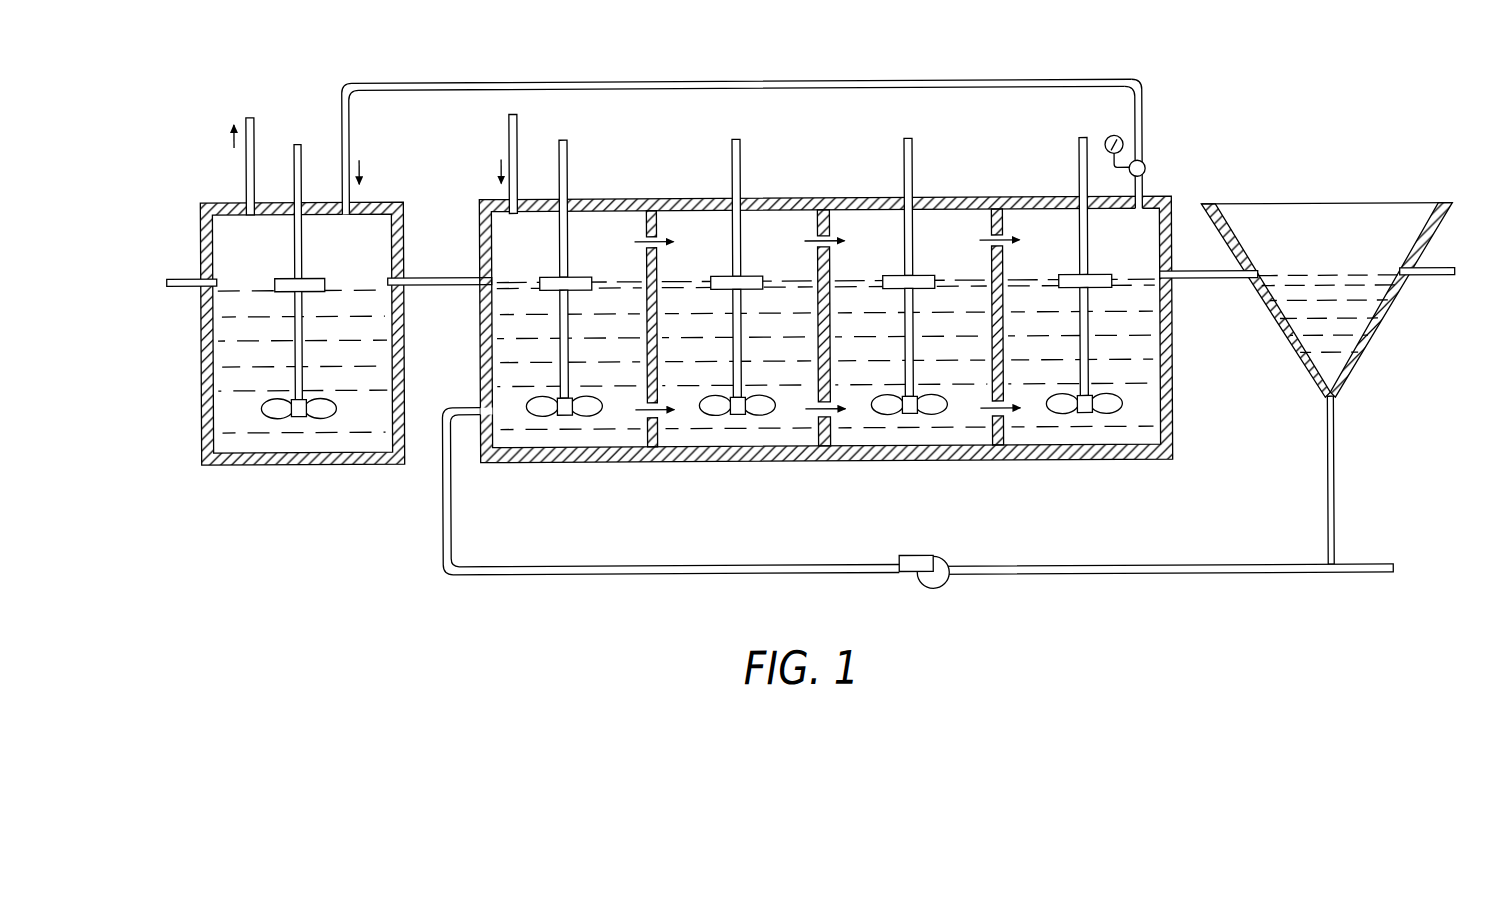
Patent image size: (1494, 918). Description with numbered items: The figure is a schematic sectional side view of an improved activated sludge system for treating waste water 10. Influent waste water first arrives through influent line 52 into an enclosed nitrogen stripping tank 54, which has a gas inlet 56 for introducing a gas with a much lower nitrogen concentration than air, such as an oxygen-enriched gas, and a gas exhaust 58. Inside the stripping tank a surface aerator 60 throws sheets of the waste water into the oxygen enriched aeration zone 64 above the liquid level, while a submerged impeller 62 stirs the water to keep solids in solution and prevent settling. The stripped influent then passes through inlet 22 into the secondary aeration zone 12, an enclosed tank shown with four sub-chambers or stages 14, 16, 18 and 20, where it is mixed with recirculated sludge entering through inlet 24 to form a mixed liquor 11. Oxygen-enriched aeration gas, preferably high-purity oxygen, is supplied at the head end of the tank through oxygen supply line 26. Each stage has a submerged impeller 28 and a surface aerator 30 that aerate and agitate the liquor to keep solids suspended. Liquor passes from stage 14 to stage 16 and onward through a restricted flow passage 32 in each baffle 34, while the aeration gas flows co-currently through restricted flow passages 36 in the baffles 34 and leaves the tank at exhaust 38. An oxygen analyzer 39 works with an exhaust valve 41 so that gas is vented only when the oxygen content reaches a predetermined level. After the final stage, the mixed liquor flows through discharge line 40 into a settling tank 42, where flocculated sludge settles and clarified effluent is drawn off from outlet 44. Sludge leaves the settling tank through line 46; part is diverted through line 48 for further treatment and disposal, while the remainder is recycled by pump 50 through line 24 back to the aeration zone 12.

The activated sludge system for treating waste water 10 is at (1229, 173).
The mixed liquor 11 is at (622, 368).
The secondary aeration zone 12 is at (646, 178).
The first sub-chamber 14 is at (536, 249).
The second sub-chamber 16 is at (712, 244).
The third sub-chamber 18 is at (955, 242).
The fourth sub-chamber 20 is at (1122, 237).
The inlet 22 is at (435, 276).
The inlet 24 is at (442, 522).
The oxygen supply line 26 is at (518, 133).
The submerged impeller 28 is at (540, 412).
The surface aerator 30 is at (578, 276).
The restricted flow passage 32 is at (648, 413).
The baffle 34 is at (659, 365).
The restricted flow passage 36 is at (658, 245).
The exhaust 38 is at (1145, 186).
The oxygen analyzer 39 is at (1116, 137).
The discharge line 40 is at (1196, 282).
The exhaust valve 41 is at (1144, 164).
The settling tank 42 is at (1286, 352).
The outlet 44 is at (1444, 279).
The line 46 is at (1335, 474).
The line 48 is at (1390, 543).
The pump 50 is at (930, 557).
The influent line 52 is at (182, 275).
The nitrogen stripping tank 54 is at (201, 399).
The gas inlet 56 is at (353, 140).
The gas exhaust 58 is at (247, 170).
The surface aerator 60 is at (312, 275).
The submerged impeller 62 is at (334, 412).
The oxygen enriched aeration zone 64 is at (272, 252).